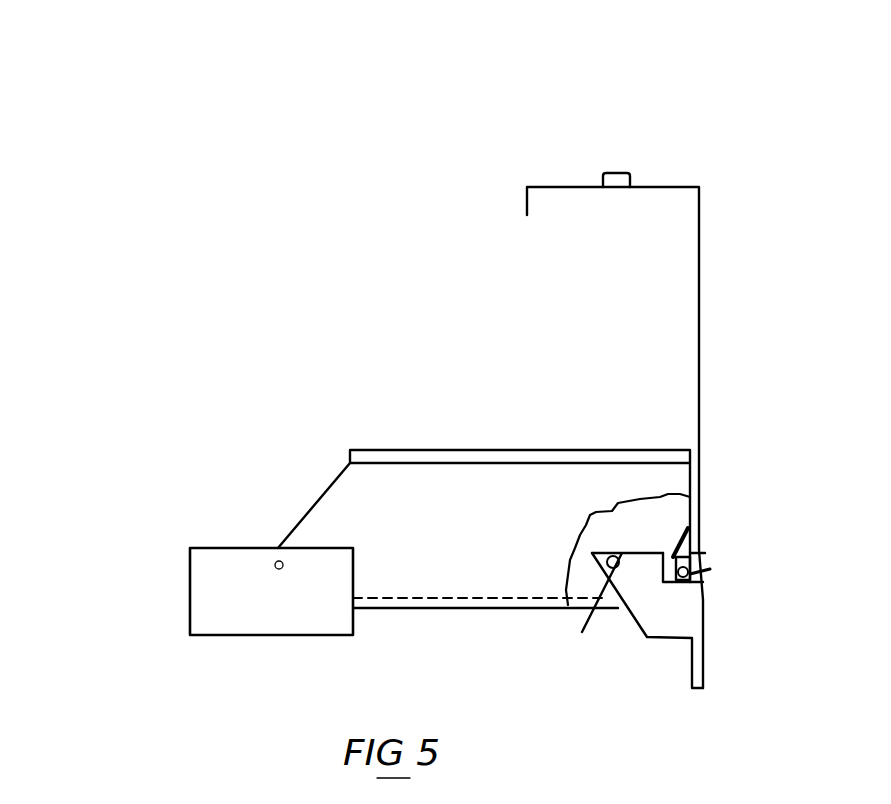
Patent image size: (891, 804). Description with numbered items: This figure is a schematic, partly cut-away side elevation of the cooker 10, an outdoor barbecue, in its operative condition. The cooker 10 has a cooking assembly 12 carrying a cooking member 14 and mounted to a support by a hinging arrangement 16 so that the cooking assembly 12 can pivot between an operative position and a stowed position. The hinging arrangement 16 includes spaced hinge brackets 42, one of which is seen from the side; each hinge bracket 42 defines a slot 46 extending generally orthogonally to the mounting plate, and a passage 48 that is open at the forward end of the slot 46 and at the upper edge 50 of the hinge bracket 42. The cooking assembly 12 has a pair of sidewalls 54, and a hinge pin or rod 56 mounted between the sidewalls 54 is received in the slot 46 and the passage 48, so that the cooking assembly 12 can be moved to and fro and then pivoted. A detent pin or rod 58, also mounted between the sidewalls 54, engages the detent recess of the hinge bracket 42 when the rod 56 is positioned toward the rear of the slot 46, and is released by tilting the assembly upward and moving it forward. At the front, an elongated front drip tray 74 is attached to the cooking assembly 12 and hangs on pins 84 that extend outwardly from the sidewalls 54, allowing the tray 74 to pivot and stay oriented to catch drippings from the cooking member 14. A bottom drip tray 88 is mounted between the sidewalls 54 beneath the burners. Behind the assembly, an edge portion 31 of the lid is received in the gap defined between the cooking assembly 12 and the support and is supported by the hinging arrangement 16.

The cooker 10 is at (750, 157).
The cooking assembly 12 is at (310, 405).
The cooking member 14 is at (407, 449).
The sidewalls 54 is at (497, 475).
The front drip tray 74 is at (205, 548).
The pins 84 is at (279, 572).
The bottom drip tray 88 is at (468, 620).
The detent pin or rod 58 is at (623, 591).
The hinge brackets 42 is at (707, 605).
The upper edge 50 is at (632, 555).
The hinge pin or rod 56 is at (700, 580).
The slot 46 is at (697, 568).
The passage 48 is at (703, 503).
The edge portion 31 is at (700, 522).
The hinging arrangement 16 is at (747, 547).